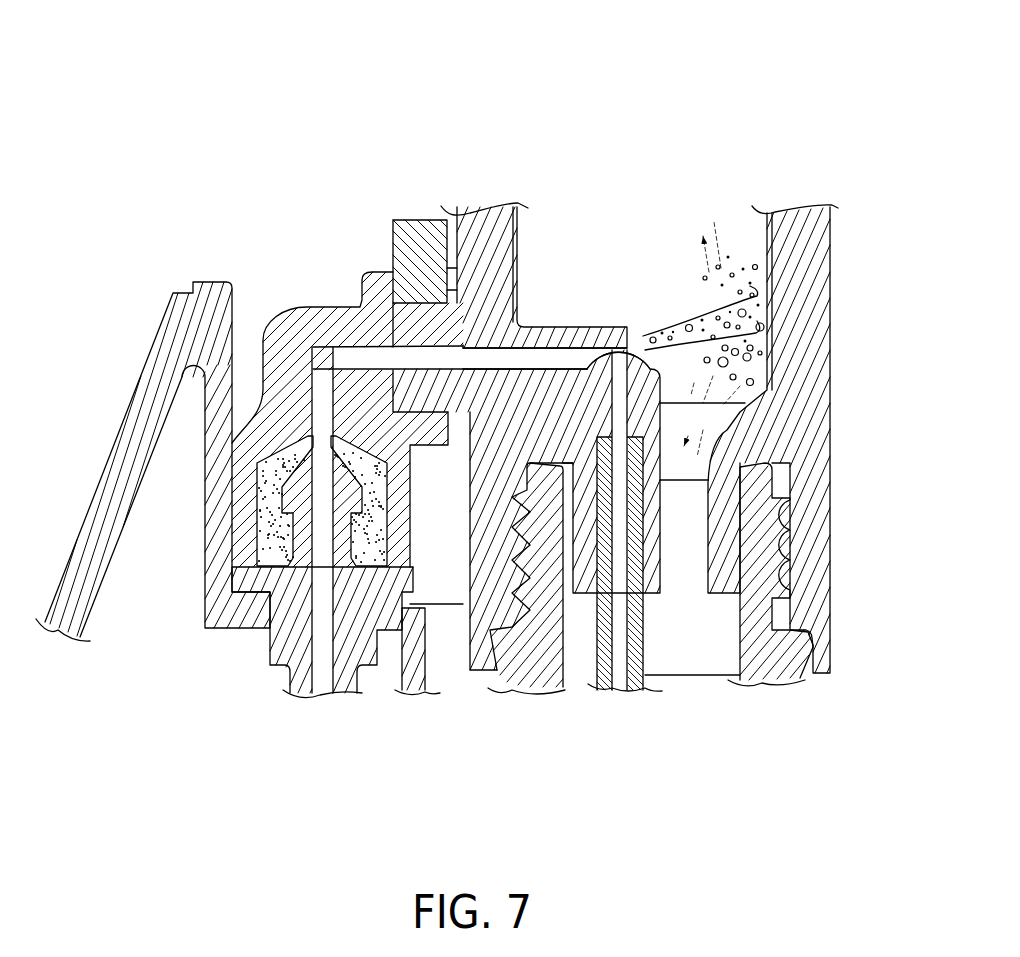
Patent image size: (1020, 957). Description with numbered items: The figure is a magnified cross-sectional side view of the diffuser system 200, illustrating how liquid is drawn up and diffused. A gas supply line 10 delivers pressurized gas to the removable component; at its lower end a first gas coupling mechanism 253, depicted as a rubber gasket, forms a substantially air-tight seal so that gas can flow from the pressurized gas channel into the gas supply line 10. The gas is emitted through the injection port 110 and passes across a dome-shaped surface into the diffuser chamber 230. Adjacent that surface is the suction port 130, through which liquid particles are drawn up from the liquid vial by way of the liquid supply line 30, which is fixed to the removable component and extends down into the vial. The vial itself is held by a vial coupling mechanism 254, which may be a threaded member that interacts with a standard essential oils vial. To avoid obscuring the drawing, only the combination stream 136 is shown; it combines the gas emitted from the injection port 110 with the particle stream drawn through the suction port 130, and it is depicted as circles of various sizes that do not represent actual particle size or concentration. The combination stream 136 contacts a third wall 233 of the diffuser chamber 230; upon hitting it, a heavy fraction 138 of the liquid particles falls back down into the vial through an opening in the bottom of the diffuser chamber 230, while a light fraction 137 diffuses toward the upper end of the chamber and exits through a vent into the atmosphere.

The diffuser system 200 is at (210, 76).
The first gas coupling mechanism 253 is at (270, 467).
The gas supply line 10 is at (417, 340).
The injection port 110 is at (585, 349).
The diffuser chamber 230 is at (628, 254).
The suction port 130 is at (618, 347).
The combination stream 136 is at (697, 316).
The third wall 233 is at (767, 239).
The light fraction 137 is at (753, 271).
The heavy fraction 138 is at (753, 366).
The liquid supply line 30 is at (650, 637).
The vial coupling mechanism 254 is at (491, 703).